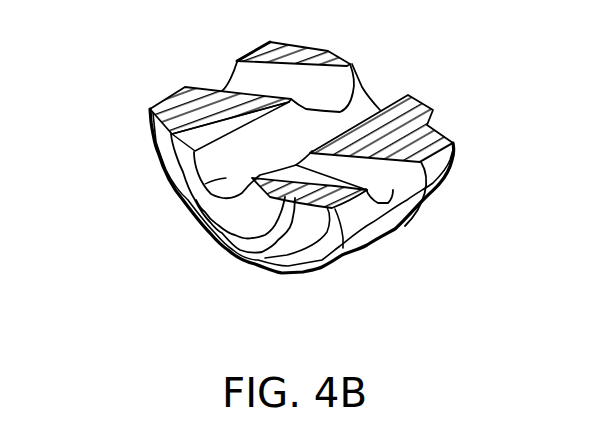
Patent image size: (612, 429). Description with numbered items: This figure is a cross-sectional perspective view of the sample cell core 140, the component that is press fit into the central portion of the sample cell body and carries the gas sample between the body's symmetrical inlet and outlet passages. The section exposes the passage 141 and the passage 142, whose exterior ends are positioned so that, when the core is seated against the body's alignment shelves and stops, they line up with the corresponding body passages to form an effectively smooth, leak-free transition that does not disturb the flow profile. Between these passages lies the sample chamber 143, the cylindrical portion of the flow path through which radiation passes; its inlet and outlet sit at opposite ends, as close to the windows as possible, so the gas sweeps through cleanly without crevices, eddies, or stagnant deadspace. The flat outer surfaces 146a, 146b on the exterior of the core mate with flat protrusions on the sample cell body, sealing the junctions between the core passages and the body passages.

The sample cell core 140 is at (302, 276).
The passage 141 is at (242, 80).
The passage 142 is at (388, 178).
The sample chamber 143 is at (200, 202).
The flat outer surface 146a is at (458, 162).
The flat outer surface 146b is at (170, 100).